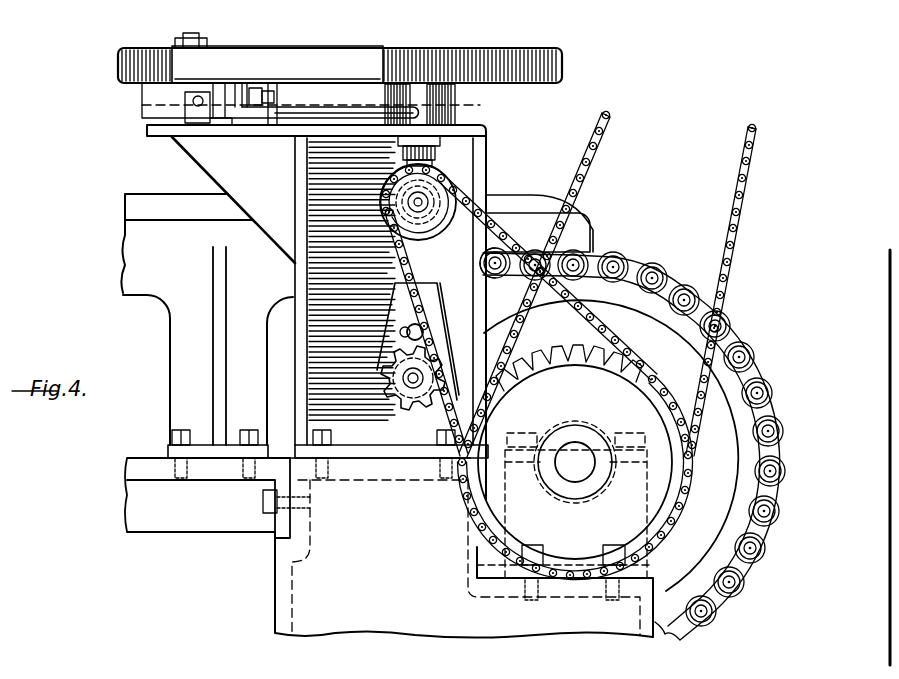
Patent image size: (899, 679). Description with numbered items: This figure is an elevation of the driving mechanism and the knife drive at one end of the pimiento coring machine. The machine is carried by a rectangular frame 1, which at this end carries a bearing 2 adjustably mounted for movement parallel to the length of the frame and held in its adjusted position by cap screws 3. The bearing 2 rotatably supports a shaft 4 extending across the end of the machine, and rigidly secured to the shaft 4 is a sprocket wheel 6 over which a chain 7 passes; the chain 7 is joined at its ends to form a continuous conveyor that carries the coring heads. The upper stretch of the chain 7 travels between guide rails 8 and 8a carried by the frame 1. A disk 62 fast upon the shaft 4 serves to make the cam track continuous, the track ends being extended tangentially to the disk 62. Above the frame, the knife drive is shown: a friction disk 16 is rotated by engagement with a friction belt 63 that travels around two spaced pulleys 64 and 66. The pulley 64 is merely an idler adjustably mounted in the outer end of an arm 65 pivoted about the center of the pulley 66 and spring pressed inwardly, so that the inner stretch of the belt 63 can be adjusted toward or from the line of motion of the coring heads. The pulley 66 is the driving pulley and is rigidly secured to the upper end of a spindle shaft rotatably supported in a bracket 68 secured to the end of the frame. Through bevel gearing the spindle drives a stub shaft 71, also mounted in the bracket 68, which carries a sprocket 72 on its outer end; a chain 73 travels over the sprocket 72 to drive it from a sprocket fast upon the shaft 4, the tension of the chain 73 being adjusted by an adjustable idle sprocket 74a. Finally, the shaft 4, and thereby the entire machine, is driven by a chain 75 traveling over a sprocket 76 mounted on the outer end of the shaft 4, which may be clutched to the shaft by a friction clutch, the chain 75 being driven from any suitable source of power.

The rectangular frame 1 is at (297, 580).
The bearing 2 is at (520, 492).
The cap screws 3 is at (607, 545).
The shaft 4 is at (581, 452).
The sprocket wheel 6 is at (603, 318).
The chain 7 is at (606, 256).
The guide rail 8 is at (145, 287).
The guide rail 8a is at (530, 211).
The friction disk 16 is at (236, 48).
The disk 62 is at (632, 424).
The friction belt 63 is at (562, 77).
The idler pulley 64 is at (133, 49).
The arm 65 is at (297, 117).
The driving pulley 66 is at (553, 28).
The bracket 68 is at (486, 133).
The stub shaft 71 is at (424, 197).
The sprocket 72 is at (421, 229).
The chain 73 is at (415, 273).
The adjustable idle sprocket 74a is at (402, 397).
The chain 75 is at (598, 164).
The sprocket 76 is at (552, 367).